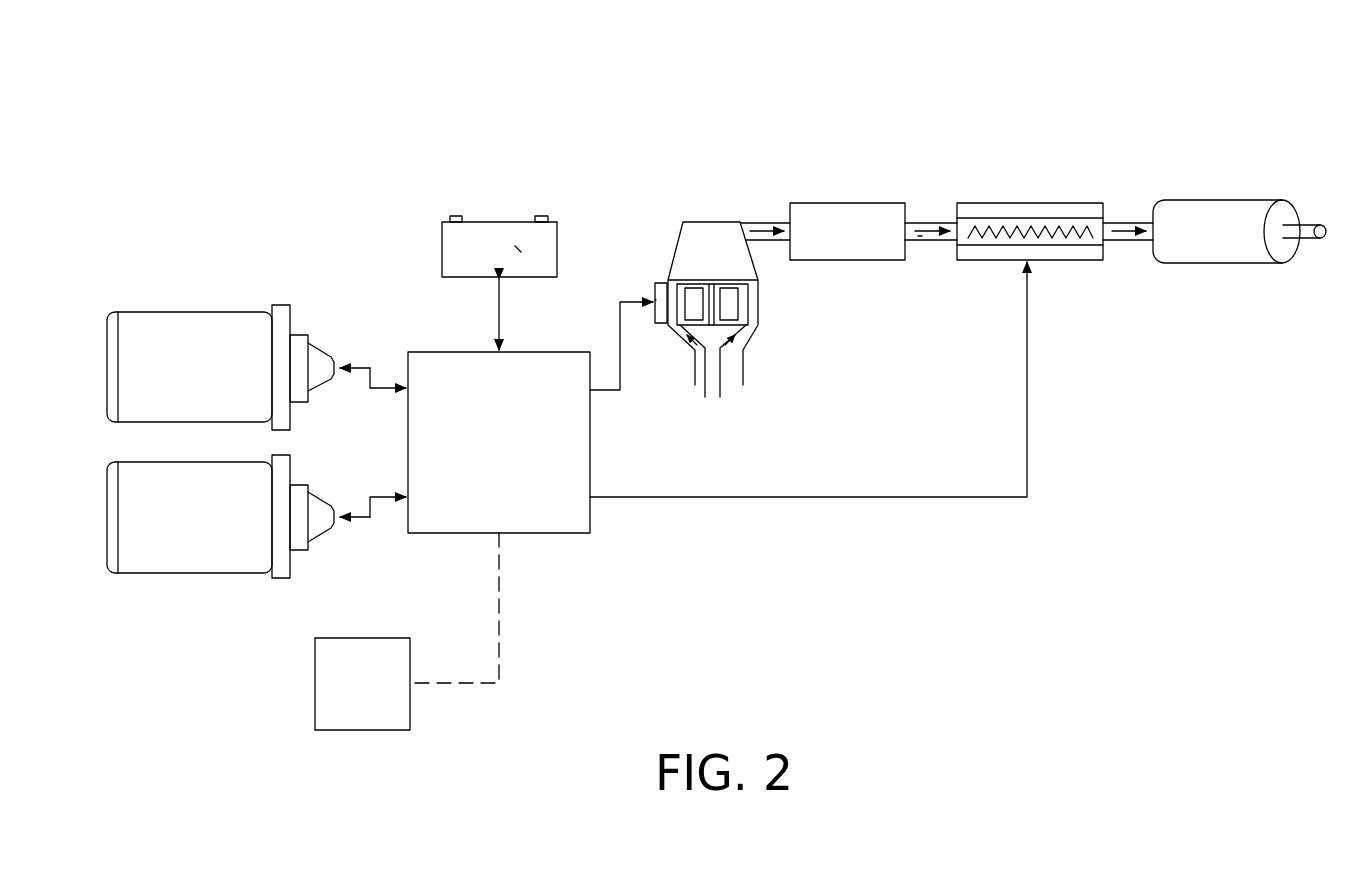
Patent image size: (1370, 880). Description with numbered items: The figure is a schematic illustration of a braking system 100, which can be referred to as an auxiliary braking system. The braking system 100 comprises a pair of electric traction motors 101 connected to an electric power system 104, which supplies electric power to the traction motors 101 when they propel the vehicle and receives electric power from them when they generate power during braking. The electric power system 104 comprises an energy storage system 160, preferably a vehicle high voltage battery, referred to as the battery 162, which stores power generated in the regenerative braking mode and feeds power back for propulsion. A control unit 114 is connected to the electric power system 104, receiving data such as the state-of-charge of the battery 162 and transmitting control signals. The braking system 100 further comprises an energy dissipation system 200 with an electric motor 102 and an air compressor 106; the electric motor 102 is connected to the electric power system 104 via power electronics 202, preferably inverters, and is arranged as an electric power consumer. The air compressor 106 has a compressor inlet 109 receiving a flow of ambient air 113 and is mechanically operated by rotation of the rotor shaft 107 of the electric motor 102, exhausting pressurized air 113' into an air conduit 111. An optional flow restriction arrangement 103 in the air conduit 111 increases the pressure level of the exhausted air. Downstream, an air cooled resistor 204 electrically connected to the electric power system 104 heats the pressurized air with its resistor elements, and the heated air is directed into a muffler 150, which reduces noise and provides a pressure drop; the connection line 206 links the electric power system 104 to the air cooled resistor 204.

The braking system 100 is at (767, 98).
The electric traction motor 101 is at (190, 312).
The electric motor 102 is at (714, 310).
The flow restriction arrangement 103 is at (850, 203).
The electric power system 104 is at (548, 533).
The air compressor 106 is at (706, 222).
The rotor shaft 107 is at (748, 318).
The compressor inlet 109 is at (758, 290).
The air conduit 111 is at (768, 222).
The flow of ambient air 113 is at (751, 361).
The pressurized air 113' is at (949, 276).
The control unit 114 is at (315, 683).
The muffler 150 is at (1226, 200).
The energy storage system 160 is at (481, 222).
The battery 162 is at (522, 250).
The energy dissipation system 200 is at (1070, 110).
The power electronics 202 is at (655, 290).
The air cooled resistor 204 is at (1020, 203).
The heater control line 206 is at (1027, 388).